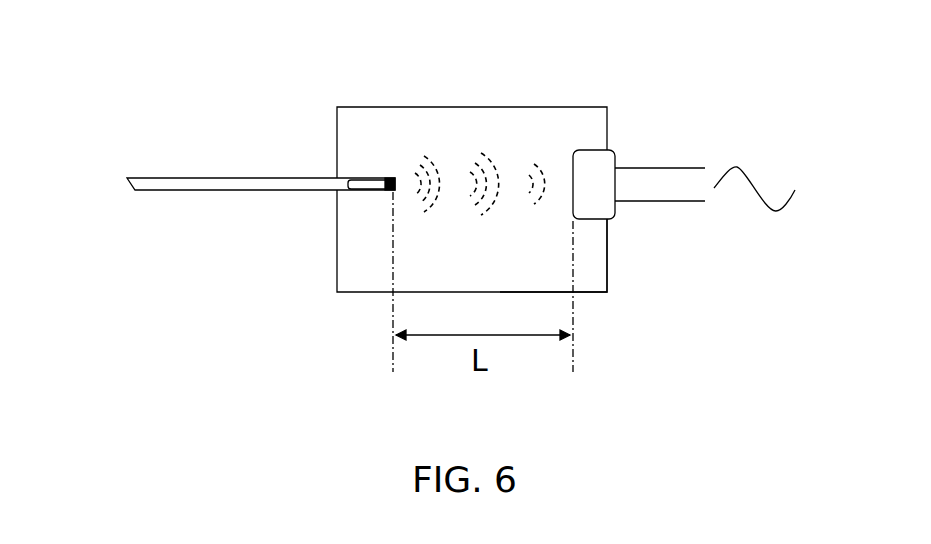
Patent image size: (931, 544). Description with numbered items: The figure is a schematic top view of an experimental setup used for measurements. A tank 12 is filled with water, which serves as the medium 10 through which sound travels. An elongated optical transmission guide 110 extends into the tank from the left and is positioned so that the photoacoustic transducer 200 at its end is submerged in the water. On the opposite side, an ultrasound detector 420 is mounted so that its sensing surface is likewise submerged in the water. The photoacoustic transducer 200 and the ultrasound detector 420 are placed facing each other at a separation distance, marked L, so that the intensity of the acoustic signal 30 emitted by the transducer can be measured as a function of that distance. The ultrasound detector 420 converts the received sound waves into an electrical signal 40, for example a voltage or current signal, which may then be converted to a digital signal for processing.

The medium 10 is at (388, 148).
The tank 12 is at (607, 272).
The acoustic signal 30 is at (480, 152).
The electrical signal 40 is at (754, 158).
The optical transmission guide 110 is at (244, 190).
The photoacoustic transducer 200 is at (362, 182).
The ultrasound detector 420 is at (608, 148).